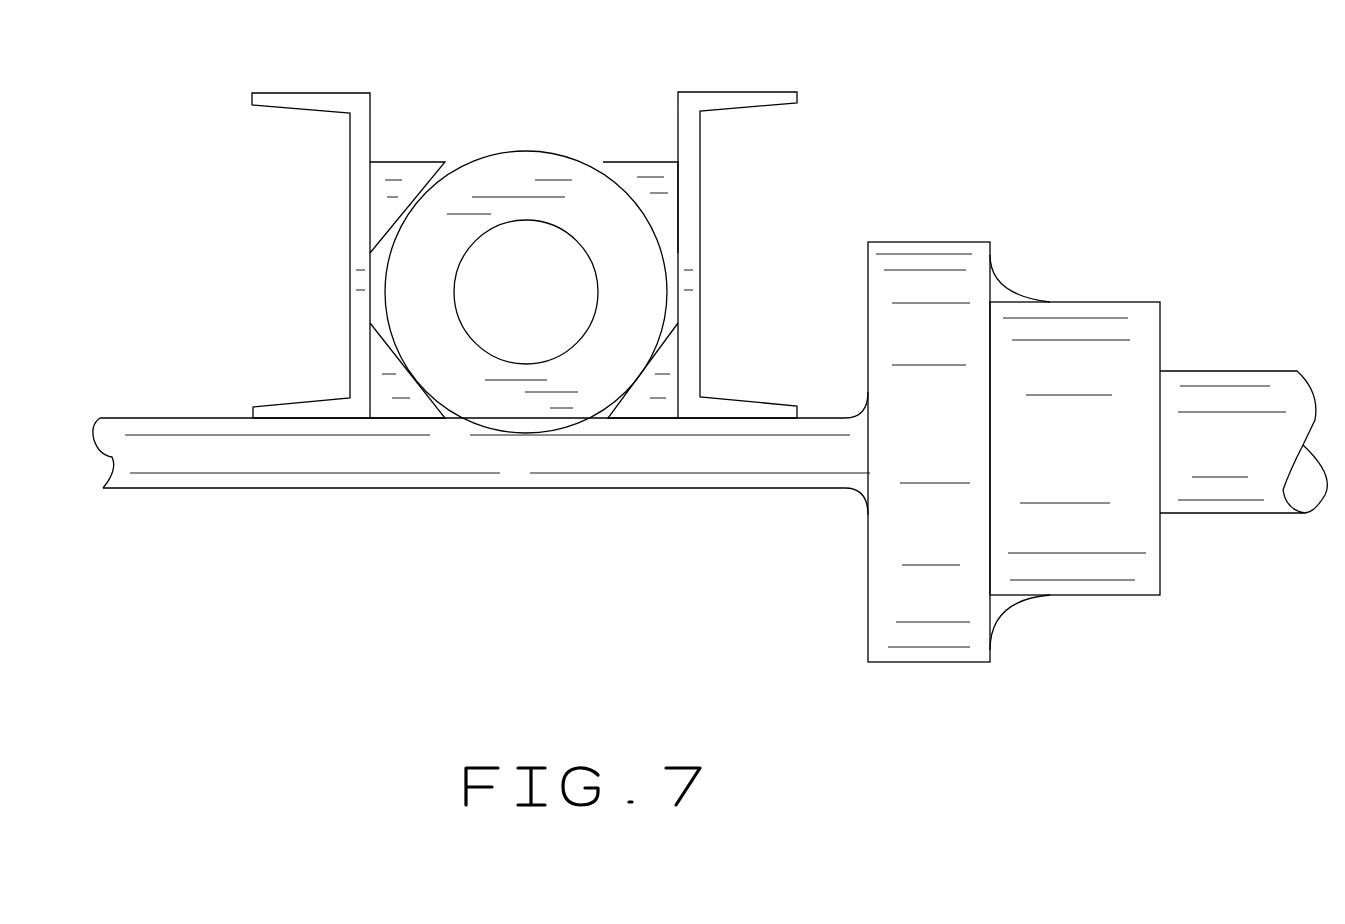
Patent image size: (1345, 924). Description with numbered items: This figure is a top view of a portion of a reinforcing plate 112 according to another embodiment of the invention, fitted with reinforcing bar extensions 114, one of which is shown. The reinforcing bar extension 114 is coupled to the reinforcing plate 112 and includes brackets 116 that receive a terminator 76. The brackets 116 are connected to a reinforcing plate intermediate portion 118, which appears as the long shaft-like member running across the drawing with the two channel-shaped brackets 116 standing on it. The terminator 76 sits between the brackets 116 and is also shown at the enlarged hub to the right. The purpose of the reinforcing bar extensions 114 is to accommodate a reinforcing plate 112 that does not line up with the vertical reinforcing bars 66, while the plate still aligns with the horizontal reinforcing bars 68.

The reinforcing plate 112 is at (185, 208).
The reinforcing bar extension 114 is at (765, 50).
The terminator 76 is at (505, 152).
The bracket 116 is at (350, 236).
The reinforcing plate intermediate portion 118 is at (166, 418).
The vertical reinforcing bar 66 is at (524, 346).
The horizontal reinforcing bar 68 is at (1220, 513).